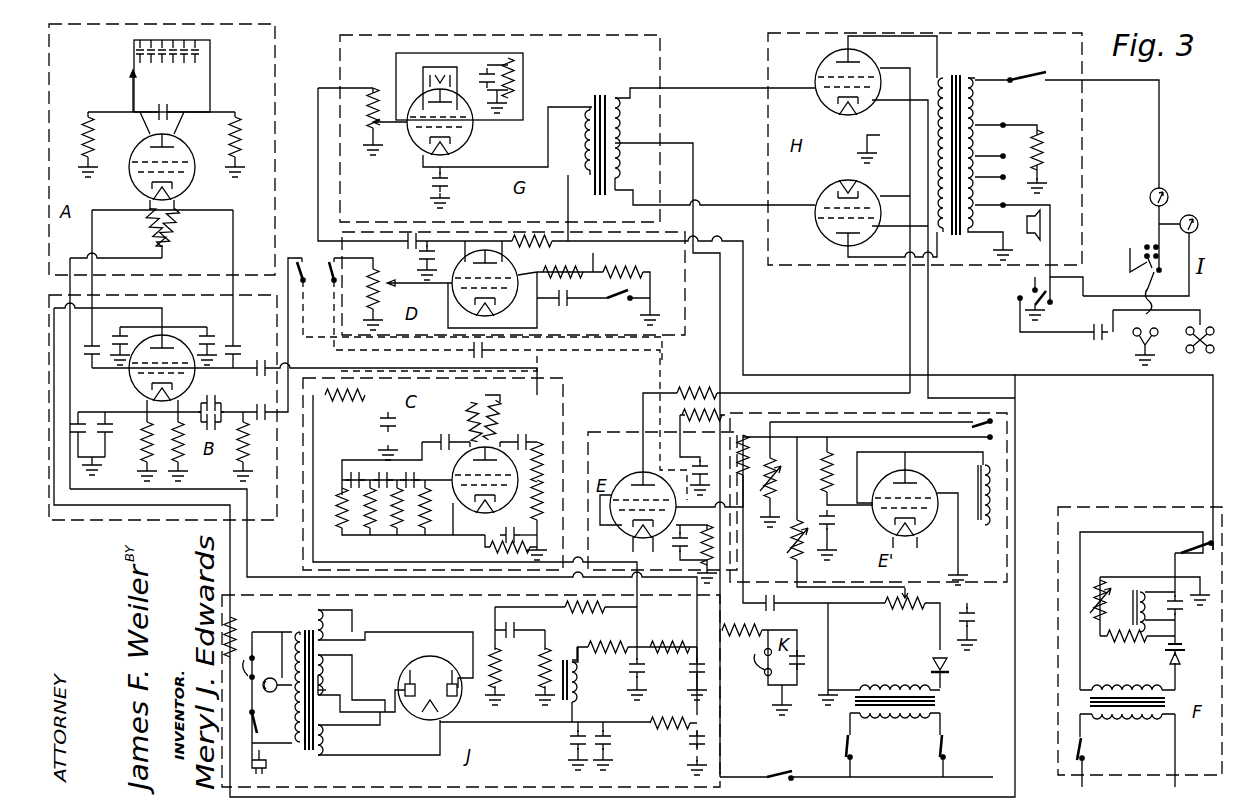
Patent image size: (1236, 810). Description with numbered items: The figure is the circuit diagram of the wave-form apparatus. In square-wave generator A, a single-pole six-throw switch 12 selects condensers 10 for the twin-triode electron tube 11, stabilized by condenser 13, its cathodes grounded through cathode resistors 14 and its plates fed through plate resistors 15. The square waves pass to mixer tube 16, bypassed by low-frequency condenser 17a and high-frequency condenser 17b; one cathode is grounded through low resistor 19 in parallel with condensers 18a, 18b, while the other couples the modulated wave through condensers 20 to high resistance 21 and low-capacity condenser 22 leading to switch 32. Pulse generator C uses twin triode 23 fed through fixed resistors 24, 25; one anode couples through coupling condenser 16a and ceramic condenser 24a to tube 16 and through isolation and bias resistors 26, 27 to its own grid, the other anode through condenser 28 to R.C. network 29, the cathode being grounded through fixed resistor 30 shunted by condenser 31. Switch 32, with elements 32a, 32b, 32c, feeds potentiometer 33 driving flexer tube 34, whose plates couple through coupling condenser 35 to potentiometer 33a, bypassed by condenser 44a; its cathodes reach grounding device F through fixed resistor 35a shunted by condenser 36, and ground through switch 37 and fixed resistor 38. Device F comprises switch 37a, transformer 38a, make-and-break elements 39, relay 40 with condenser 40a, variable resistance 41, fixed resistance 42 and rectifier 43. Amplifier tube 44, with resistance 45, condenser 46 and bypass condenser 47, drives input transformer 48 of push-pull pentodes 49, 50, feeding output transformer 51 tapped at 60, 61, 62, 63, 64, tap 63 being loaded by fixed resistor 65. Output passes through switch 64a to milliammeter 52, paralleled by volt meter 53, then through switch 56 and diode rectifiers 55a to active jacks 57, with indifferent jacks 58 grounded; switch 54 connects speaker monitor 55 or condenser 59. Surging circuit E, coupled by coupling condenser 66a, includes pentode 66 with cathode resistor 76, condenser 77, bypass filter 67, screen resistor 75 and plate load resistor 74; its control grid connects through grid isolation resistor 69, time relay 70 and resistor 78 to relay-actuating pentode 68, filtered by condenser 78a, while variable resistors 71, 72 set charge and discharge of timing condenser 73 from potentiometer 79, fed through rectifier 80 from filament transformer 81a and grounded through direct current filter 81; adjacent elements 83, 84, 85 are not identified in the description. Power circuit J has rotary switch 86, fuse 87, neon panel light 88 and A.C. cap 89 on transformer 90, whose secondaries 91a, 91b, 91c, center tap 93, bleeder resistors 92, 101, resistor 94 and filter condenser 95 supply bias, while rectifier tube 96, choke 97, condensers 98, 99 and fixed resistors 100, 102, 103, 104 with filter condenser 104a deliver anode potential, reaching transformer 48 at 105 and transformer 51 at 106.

The condensers 10 is at (212, 72).
The electron tube 11 is at (196, 184).
The single-pole six-throw switch 12 is at (151, 67).
The condenser 13 is at (168, 109).
The cathode resistors 14 is at (80, 134).
The plate resistors 15 is at (148, 234).
The duo or twin triode tube 16 is at (196, 373).
The coupling condenser 16a is at (259, 358).
The low-frequency bypass condenser 17a is at (112, 334).
The high-frequency bypass condenser 17b is at (207, 328).
The high capacity condenser 18a is at (78, 412).
The low capacity condenser 18b is at (110, 412).
The low resistor 19 is at (175, 451).
The low and high capacity condensers 20 is at (226, 404).
The high resistance 21 is at (248, 447).
The low capacity condenser 22 is at (261, 404).
The duo or twin triode 23 is at (512, 500).
The fixed resistor 24 is at (499, 410).
The low capacity ceramic condenser 24a is at (525, 440).
The fixed resistor 25 is at (468, 421).
The isolation and bias resistor 26 is at (541, 460).
The isolation and bias resistor 27 is at (541, 498).
The condenser 28 is at (436, 438).
The R.C. network 29 is at (381, 545).
The fixed resistor 30 is at (490, 552).
The condenser 31 is at (509, 536).
The four-pole double-throw switch 32 is at (316, 279).
The switch element 32a is at (946, 748).
The switch element 32b is at (853, 748).
The switch element 32c is at (774, 773).
The potentiometer 33 is at (384, 296).
The potentiometer 33a is at (366, 100).
The twin triode 34 is at (511, 262).
The coupling condenser 35 is at (416, 236).
The fixed resistor 35a is at (565, 266).
The condenser 36 is at (567, 306).
The switch 37 is at (618, 306).
The double pole double throw switch 37a is at (1088, 760).
The fixed resistor 38 is at (643, 268).
The transformer 38a is at (1088, 706).
The make and break elements 39 is at (1195, 552).
The relay 40 is at (1172, 649).
The condenser 40a is at (1180, 604).
The variable resistance 41 is at (1096, 588).
The fixed resistance 42 is at (1130, 645).
The rectifier 43 is at (1182, 660).
The twin triode amplifier tube 44 is at (477, 130).
The bypass condenser 44a is at (418, 256).
The fixed resistance 45 is at (516, 76).
The condenser 46 is at (484, 76).
The bypass condenser 47 is at (452, 183).
The input transformer 48 is at (601, 88).
The push-pull amplifier tube 49 is at (818, 70).
The push-pull amplifier tube 50 is at (818, 232).
The output transformer 51 is at (955, 70).
The milliammeter 52 is at (1166, 192).
The volt meter 53 is at (1194, 217).
The switch 54 is at (1052, 310).
The speaker monitor 55 is at (1036, 242).
The diode rectifiers 55a is at (1146, 246).
The single-pole triple-throw switch 56 is at (1155, 290).
The output jacks 57 is at (1204, 326).
The indifferent jacks 58 is at (1132, 342).
The condenser 59 is at (1088, 340).
The transformer tap 60 is at (1002, 206).
The transformer tap 61 is at (1004, 178).
The transformer tap 62 is at (1004, 155).
The transformer tap 63 is at (1008, 120).
The transformer tap 64 is at (1016, 86).
The switch 64a is at (1022, 74).
The fixed resistor 65 is at (1042, 152).
The pentode 66 is at (638, 477).
The coupling condenser 66a is at (486, 354).
The bypass filter 67 is at (706, 467).
The relay actuating pentode 68 is at (927, 482).
The grid isolation resistor 69 is at (746, 462).
The time relay 70 is at (1000, 426).
The variable resistor 71 is at (780, 474).
The variable resistor 72 is at (790, 548).
The timing condenser 73 is at (780, 610).
The plate load resistor 74 is at (690, 390).
The screen-grid voltage-dropping resistor 75 is at (698, 418).
The fixed resistor 76 is at (684, 543).
The condenser 77 is at (656, 551).
The fixed resistor 78 is at (835, 478).
The condenser 78a is at (832, 535).
The potentiometer 79 is at (909, 590).
The rectifier 80 is at (928, 664).
The direct current filter 81 is at (974, 614).
The filament transformer 81a is at (937, 702).
The relay contacts 83 is at (764, 652).
The capacitor 84 is at (804, 660).
The resistor 85 is at (736, 627).
The rotary switch 86 is at (258, 726).
The fuse 87 is at (246, 678).
The neon panel light 88 is at (284, 676).
The plug-in or A.C. cap 89 is at (268, 768).
The transformer 90 is at (325, 610).
The secondary 91a is at (328, 648).
The high voltage secondary 91b is at (327, 678).
The secondary 91c is at (330, 740).
The bleeder resistor 92 is at (546, 652).
The center tap 93 is at (328, 692).
The resistor 94 is at (502, 666).
The filter condenser 95 is at (514, 626).
The rectifier tube 96 is at (430, 688).
The choke 97 is at (578, 680).
The condenser 98 is at (571, 740).
The condenser 99 is at (608, 742).
The fixed resistor 100 is at (604, 642).
The bleeder resistor 101 is at (582, 606).
The fixed resistor 102 is at (668, 644).
The fixed resistor 103 is at (237, 632).
The fixed resistor 104 is at (668, 720).
The filter condenser 104a is at (688, 744).
The supply point 105 is at (626, 142).
The supply point 106 is at (930, 160).